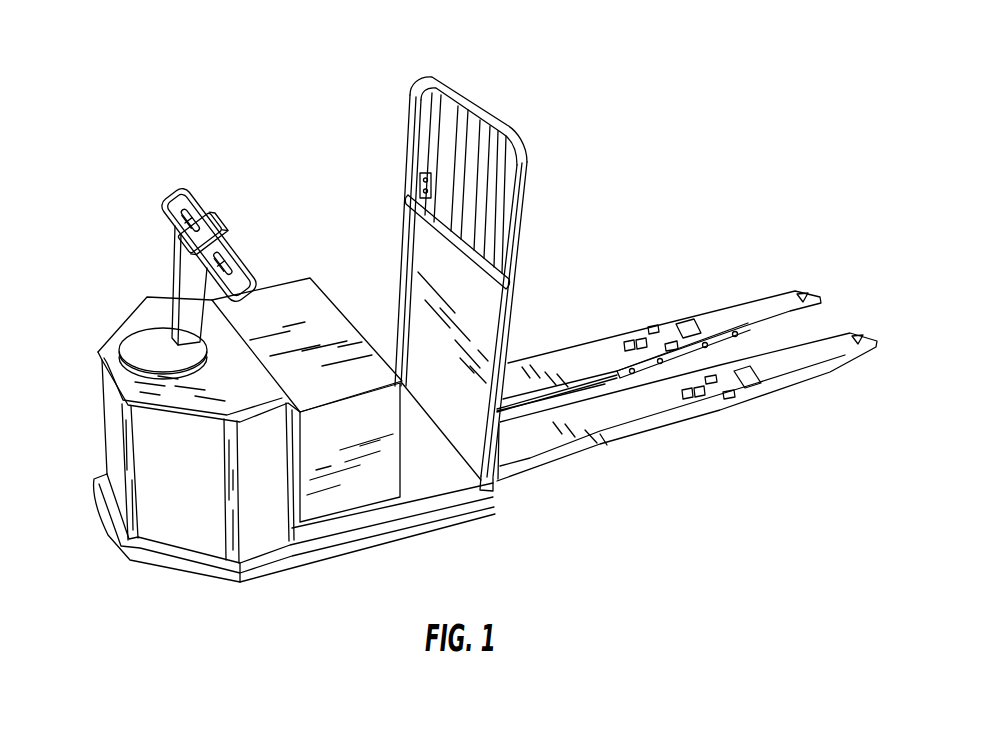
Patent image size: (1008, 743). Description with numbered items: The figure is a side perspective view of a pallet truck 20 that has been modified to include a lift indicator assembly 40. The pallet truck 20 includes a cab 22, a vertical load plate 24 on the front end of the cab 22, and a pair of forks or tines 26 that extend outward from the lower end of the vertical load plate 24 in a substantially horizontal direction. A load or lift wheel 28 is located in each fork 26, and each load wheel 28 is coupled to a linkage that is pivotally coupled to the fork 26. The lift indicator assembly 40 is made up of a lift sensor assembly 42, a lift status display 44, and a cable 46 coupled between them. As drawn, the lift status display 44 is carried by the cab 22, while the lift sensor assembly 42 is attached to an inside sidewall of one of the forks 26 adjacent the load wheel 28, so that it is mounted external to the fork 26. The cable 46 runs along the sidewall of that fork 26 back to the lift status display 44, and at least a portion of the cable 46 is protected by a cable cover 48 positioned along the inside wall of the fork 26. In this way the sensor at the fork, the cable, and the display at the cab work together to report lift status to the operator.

The pallet truck 20 is at (174, 166).
The cab 22 is at (100, 386).
The vertical load plate 24 is at (500, 419).
The forks or tines 26 is at (862, 338).
The load wheel 28 is at (690, 325).
The lift indicator assembly 40 is at (604, 146).
The lift sensor assembly 42 is at (628, 368).
The lift status display 44 is at (430, 172).
The cable 46 is at (397, 262).
The cable cover 48 is at (566, 345).